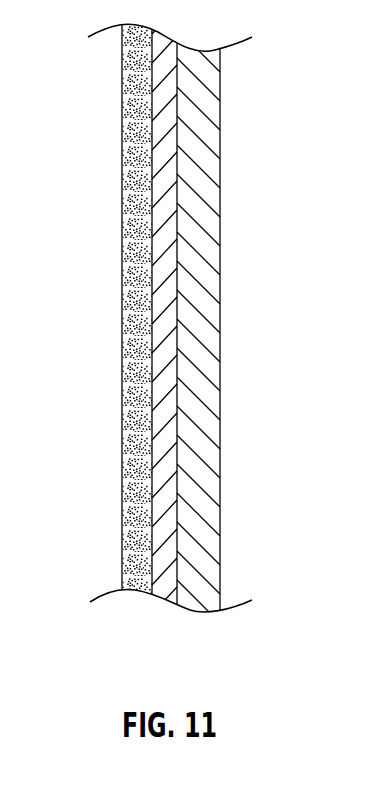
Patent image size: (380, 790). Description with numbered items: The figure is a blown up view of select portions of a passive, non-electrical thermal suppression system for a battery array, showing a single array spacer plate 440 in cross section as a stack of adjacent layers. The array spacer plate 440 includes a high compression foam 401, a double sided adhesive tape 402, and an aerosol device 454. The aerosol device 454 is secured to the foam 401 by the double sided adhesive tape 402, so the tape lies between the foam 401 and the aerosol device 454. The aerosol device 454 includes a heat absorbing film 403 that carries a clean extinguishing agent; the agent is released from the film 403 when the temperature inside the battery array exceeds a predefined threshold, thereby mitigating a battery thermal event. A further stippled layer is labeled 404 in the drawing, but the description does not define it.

The array spacer plate 440 is at (283, 37).
The high compression foam 401 is at (198, 350).
The double sided adhesive tape 402 is at (164, 350).
The heat absorbing film 403 is at (122, 391).
The stippled layer 404 is at (130, 513).
The aerosol device 454 is at (133, 568).